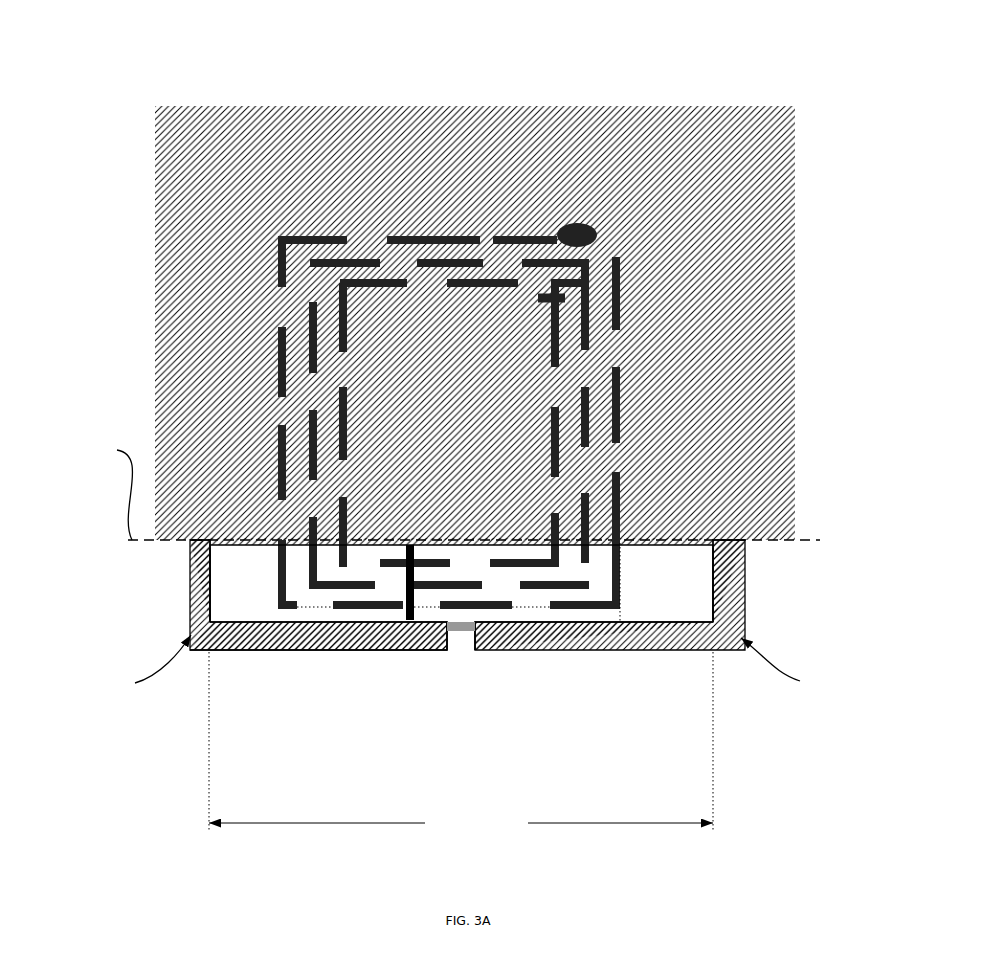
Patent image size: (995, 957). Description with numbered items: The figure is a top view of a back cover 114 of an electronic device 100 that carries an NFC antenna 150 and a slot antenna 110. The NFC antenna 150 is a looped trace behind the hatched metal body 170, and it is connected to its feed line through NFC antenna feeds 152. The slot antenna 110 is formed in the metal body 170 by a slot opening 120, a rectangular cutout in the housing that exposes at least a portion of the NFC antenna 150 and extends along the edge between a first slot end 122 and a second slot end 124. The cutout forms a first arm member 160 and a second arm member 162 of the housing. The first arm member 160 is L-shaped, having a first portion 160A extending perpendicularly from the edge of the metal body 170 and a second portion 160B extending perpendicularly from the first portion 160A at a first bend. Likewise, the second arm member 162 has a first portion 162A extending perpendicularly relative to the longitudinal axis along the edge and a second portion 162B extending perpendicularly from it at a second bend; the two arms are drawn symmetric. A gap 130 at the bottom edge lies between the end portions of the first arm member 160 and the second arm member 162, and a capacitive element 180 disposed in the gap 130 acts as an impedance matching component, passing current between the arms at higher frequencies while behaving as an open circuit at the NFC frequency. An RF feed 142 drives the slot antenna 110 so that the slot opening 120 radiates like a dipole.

The electronic device 100 is at (226, 94).
The back cover 114 is at (157, 263).
The metal body 170 is at (188, 362).
The NFC antenna 150 is at (432, 210).
The NFC antenna feed 152 is at (589, 216).
The slot antenna 110 is at (679, 581).
The slot opening 120 is at (643, 589).
The first slot end 122 is at (209, 577).
The second slot end 124 is at (722, 580).
The gap 130 is at (447, 652).
The RF feed 142 is at (408, 624).
The first arm member 160 is at (313, 656).
The first portion of first arm member 160A is at (191, 607).
The second portion of first arm member 160B is at (272, 632).
The second arm member 162 is at (578, 652).
The first portion of second arm member 162A is at (737, 595).
The second portion of second arm member 162B is at (677, 637).
The capacitive element 180 is at (479, 629).